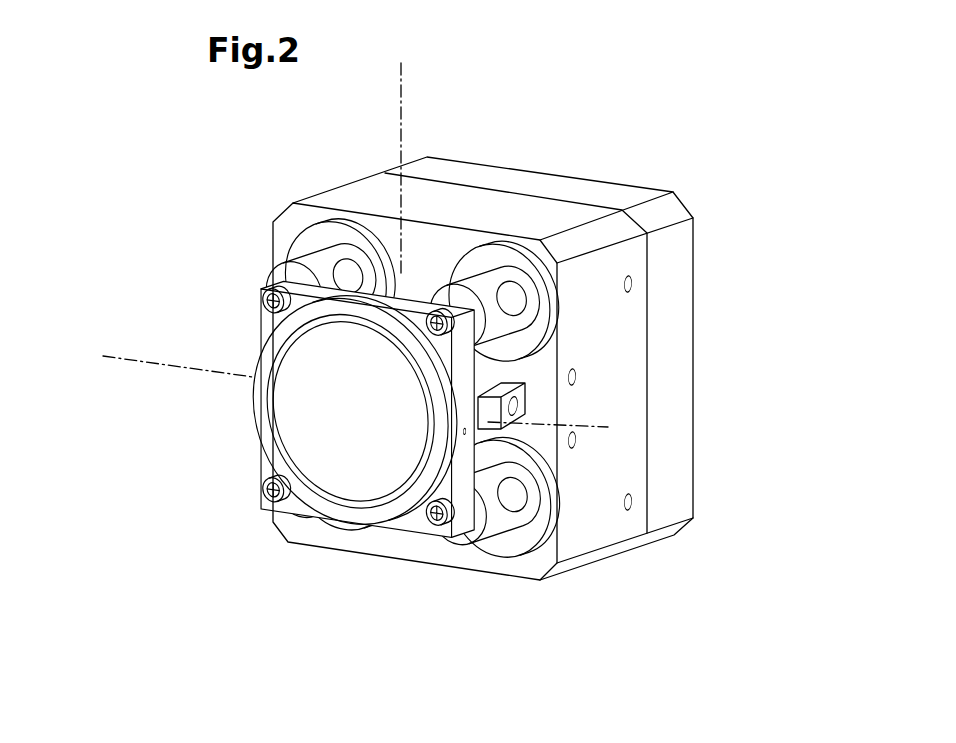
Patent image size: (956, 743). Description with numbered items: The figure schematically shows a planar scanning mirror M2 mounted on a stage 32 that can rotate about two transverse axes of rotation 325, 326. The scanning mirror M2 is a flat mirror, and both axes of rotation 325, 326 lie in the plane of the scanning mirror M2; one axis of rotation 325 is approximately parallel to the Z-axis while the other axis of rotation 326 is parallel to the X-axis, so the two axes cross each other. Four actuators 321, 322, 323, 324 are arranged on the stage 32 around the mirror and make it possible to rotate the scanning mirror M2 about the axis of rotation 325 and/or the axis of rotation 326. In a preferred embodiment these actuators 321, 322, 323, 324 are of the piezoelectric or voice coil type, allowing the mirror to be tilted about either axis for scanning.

The stage 32 is at (675, 333).
The actuator 321 is at (330, 277).
The actuator 322 is at (494, 299).
The actuator 323 is at (495, 495).
The actuator 324 is at (355, 410).
The axis of rotation 325 is at (401, 82).
The axis of rotation 326 is at (143, 359).
The scanning mirror M2 is at (350, 411).